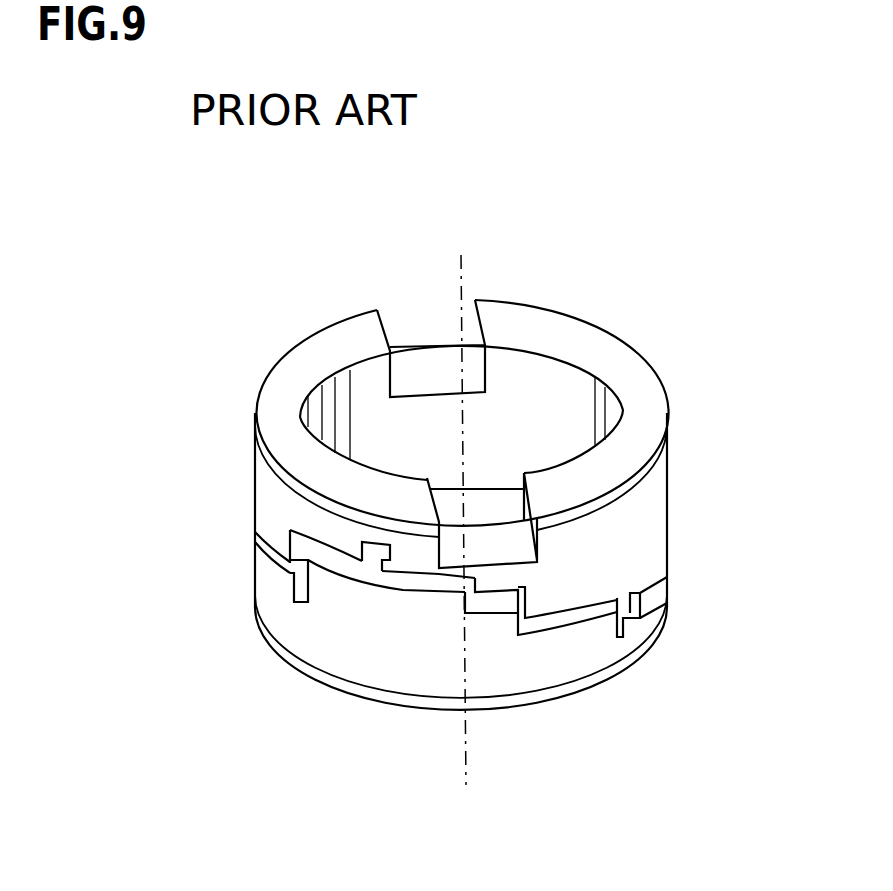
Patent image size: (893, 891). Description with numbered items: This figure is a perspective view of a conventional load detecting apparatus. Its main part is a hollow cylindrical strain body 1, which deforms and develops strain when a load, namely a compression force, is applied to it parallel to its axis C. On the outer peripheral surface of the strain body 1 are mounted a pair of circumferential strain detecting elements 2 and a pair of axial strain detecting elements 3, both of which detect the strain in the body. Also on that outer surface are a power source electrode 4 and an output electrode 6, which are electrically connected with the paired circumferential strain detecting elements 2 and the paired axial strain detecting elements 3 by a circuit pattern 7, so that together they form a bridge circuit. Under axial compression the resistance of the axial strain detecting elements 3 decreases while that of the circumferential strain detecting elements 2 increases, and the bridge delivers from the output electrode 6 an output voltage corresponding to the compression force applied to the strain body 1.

The hollow cylindrical strain body 1 is at (637, 513).
The circumferential strain detecting element 2 is at (492, 605).
The axial strain detecting element 3 is at (300, 570).
The power source electrode 4 is at (378, 548).
The output electrode 6 is at (630, 615).
The circuit pattern 7 is at (403, 580).
The axis C is at (466, 290).